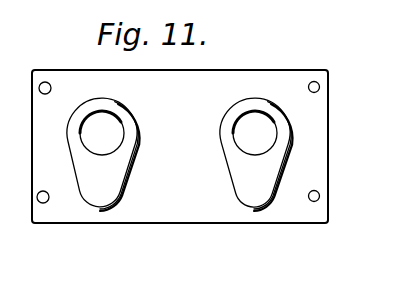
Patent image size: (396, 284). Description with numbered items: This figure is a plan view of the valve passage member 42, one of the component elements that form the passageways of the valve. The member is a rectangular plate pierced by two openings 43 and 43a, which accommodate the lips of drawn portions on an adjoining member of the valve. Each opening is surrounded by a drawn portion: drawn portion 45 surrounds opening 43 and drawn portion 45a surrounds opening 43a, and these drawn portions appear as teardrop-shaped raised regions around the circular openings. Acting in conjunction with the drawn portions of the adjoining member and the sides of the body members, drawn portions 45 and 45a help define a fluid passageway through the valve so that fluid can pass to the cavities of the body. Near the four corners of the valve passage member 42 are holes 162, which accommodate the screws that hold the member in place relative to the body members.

The valve passage member 42 is at (331, 101).
The holes 162 is at (44, 82).
The opening 43 is at (251, 100).
The opening 43a is at (95, 110).
The drawn portion 45 is at (268, 185).
The drawn portion 45a is at (101, 182).